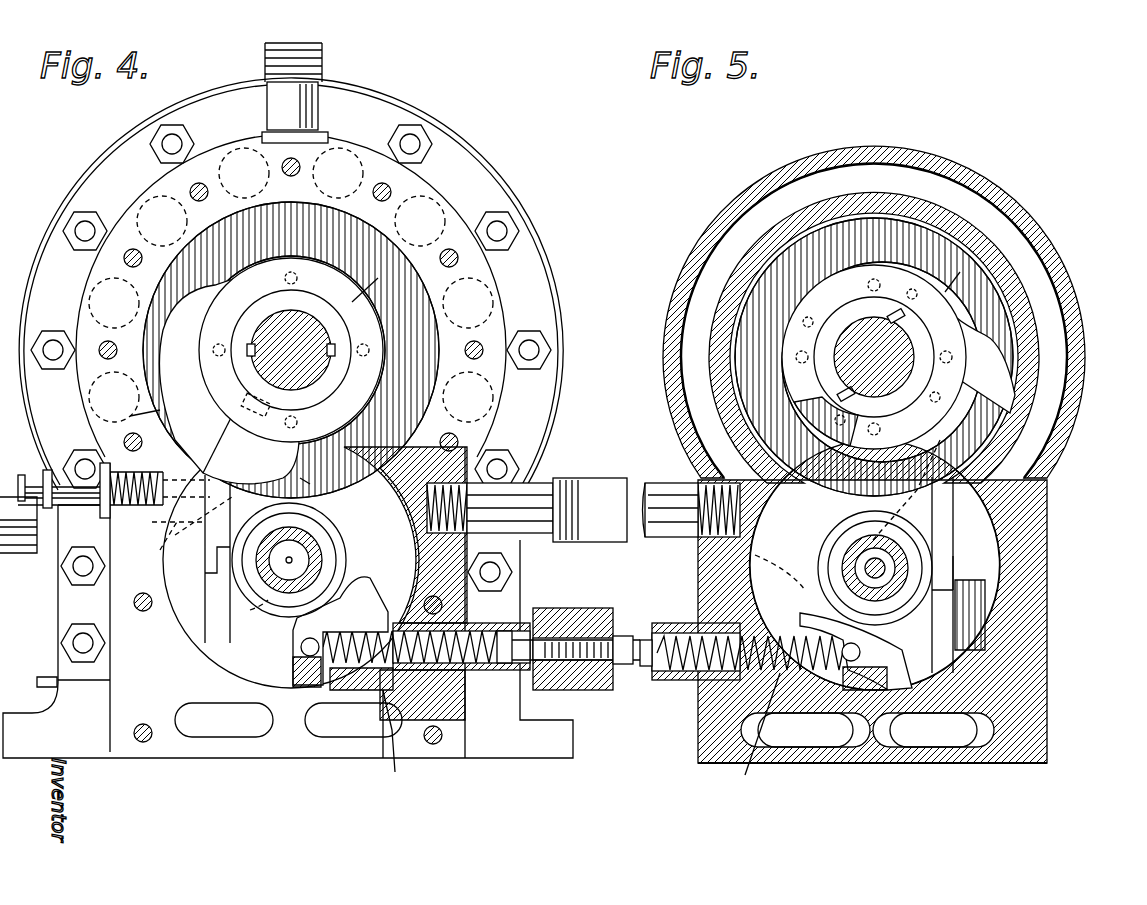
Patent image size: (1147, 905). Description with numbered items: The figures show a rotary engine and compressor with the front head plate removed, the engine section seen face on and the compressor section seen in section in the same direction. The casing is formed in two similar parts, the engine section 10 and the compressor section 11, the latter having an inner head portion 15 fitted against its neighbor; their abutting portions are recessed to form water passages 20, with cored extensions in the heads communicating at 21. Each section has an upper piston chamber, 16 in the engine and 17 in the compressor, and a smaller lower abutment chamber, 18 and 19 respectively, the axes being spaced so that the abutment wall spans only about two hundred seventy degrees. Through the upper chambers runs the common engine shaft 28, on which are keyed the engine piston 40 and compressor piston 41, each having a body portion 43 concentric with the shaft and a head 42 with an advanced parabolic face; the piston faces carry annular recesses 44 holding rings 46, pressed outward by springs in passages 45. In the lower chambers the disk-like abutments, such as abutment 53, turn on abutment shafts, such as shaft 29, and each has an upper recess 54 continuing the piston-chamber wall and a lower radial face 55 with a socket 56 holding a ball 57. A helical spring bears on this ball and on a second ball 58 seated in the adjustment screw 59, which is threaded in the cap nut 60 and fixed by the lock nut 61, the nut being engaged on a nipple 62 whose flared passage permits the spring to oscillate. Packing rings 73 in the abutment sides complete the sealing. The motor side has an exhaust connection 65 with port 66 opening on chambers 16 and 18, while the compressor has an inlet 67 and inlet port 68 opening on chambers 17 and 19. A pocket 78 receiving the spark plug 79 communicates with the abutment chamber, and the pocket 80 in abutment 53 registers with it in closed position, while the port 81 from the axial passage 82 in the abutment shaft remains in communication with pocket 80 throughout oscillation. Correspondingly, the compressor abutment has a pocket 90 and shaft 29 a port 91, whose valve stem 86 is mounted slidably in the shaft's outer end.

In FIG. 4, the casing section 10 is at (45, 680).
In FIG. 5, the casing section 11 is at (1028, 657).
In FIG. 5, the inner head portion 15 is at (720, 352).
In FIG. 4, the piston chamber 16 is at (291, 350).
In FIG. 5, the piston chamber 17 is at (874, 357).
In FIG. 4, the abutment chamber 18 is at (165, 556).
In FIG. 5, the abutment chamber 19 is at (1005, 603).
In FIG. 5, the water passage 20 is at (700, 298).
In FIG. 4, the passage communication 21 is at (215, 160).
In FIG. 5, the passage communication 21 is at (867, 730).
In FIG. 4, the engine shaft 28 is at (265, 355).
In FIG. 5, the engine shaft 28 is at (915, 355).
In FIG. 5, the abutment shaft 29 is at (885, 600).
In FIG. 4, the engine piston 40 is at (134, 418).
In FIG. 5, the compressor piston 41 is at (815, 430).
In FIG. 4, the head portion 42 is at (271, 371).
In FIG. 5, the head portion 42 is at (948, 359).
In FIG. 4, the body portion 43 is at (377, 279).
In FIG. 5, the body portion 43 is at (963, 271).
In FIG. 4, the annular recess 44 is at (210, 338).
In FIG. 5, the annular recess 44 is at (802, 405).
In FIG. 4, the spring receiving passage 45 is at (298, 280).
In FIG. 5, the spring receiving passage 45 is at (843, 428).
In FIG. 4, the ring 46 is at (232, 382).
In FIG. 5, the ring 46 is at (940, 315).
In FIG. 4, the abutment 53 is at (200, 572).
In FIG. 4, the recess 54 is at (323, 473).
In FIG. 5, the recess 54 is at (865, 500).
In FIG. 4, the radial face 55 is at (300, 700).
In FIG. 5, the radial face 55 is at (835, 632).
In FIG. 4, the semi-spherical socket 56 is at (300, 650).
In FIG. 5, the semi-spherical socket 56 is at (858, 690).
In FIG. 4, the ball 57 is at (293, 682).
In FIG. 5, the ball 57 is at (890, 668).
In FIG. 4, the ball 58 is at (500, 663).
In FIG. 5, the ball 58 is at (670, 672).
In FIG. 4, the adjustment screw 59 is at (545, 690).
In FIG. 4, the cap nut 60 is at (585, 608).
In FIG. 4, the lock nut 61 is at (628, 636).
In FIG. 5, the lock nut 61 is at (648, 630).
In FIG. 4, the nipple 62 is at (530, 623).
In FIG. 5, the nipple 62 is at (700, 625).
In FIG. 4, the exhaust connection 65 is at (565, 478).
In FIG. 4, the port 66 is at (490, 564).
In FIG. 5, the inlet 67 is at (665, 490).
In FIG. 5, the inlet port 68 is at (765, 493).
In FIG. 4, the packing ring 73 is at (250, 615).
In FIG. 5, the packing ring 73 is at (840, 535).
In FIG. 4, the pocket 78 is at (175, 480).
In FIG. 4, the spark plug 79 is at (50, 478).
In FIG. 4, the pocket 80 is at (168, 524).
In FIG. 4, the port 81 is at (289, 540).
In FIG. 4, the axial passage 82 is at (289, 560).
In FIG. 5, the stem 86 is at (900, 570).
In FIG. 5, the pocket 90 is at (906, 490).
In FIG. 5, the port 91 is at (876, 548).